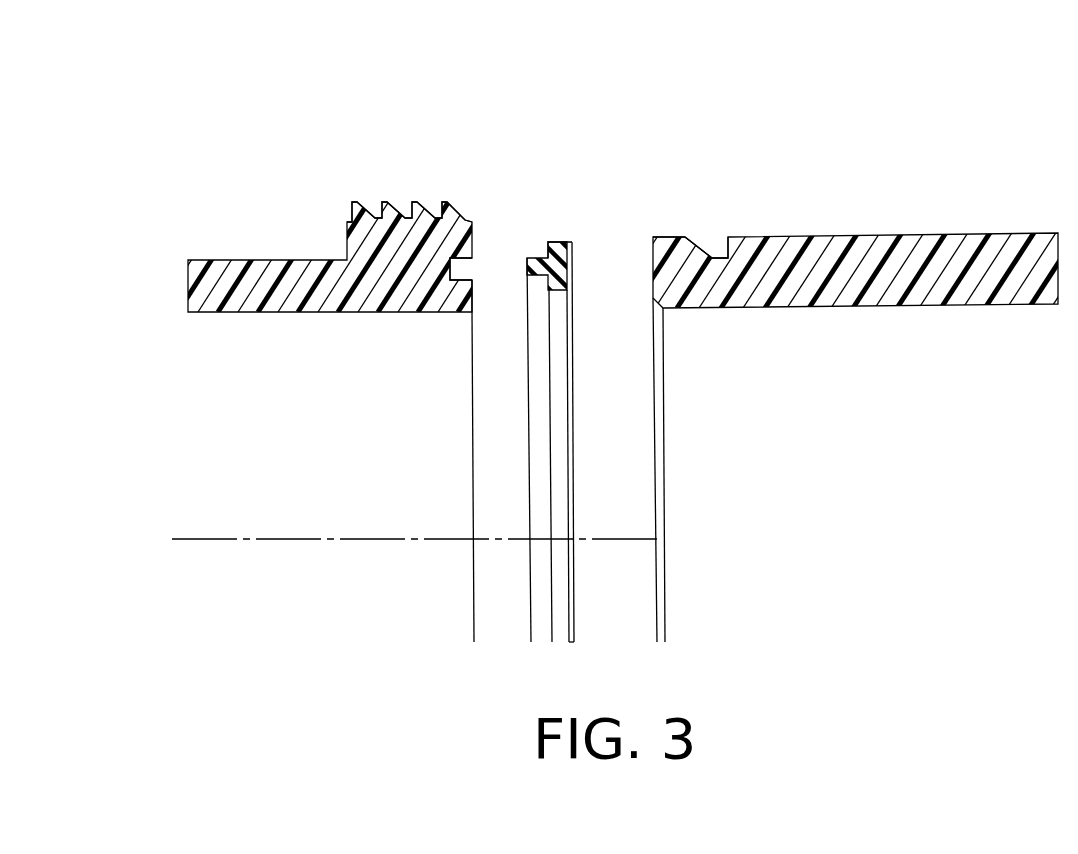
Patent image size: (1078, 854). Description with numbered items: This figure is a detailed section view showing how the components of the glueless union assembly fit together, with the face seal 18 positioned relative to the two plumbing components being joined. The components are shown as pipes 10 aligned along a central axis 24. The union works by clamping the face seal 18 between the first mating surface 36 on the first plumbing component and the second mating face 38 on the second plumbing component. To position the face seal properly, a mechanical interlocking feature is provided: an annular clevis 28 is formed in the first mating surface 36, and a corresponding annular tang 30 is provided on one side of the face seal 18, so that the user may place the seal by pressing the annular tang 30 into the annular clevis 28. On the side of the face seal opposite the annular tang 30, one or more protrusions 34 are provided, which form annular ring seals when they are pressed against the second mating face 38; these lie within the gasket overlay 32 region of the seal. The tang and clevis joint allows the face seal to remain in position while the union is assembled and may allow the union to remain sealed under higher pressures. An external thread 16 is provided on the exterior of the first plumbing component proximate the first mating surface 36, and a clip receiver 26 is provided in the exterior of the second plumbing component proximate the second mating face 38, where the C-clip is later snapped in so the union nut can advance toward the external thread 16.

The pipe 10 is at (608, 372).
The external thread 16 is at (385, 144).
The face seal 18 is at (488, 442).
The central axis 24 is at (414, 484).
The clip receiver 26 is at (777, 180).
The annular clevis 28 is at (528, 173).
The annular tang 30 is at (584, 251).
The gasket overlay 32 is at (608, 224).
The protrusion 34 is at (568, 250).
The first mating surface 36 is at (551, 208).
The second mating face 38 is at (721, 170).